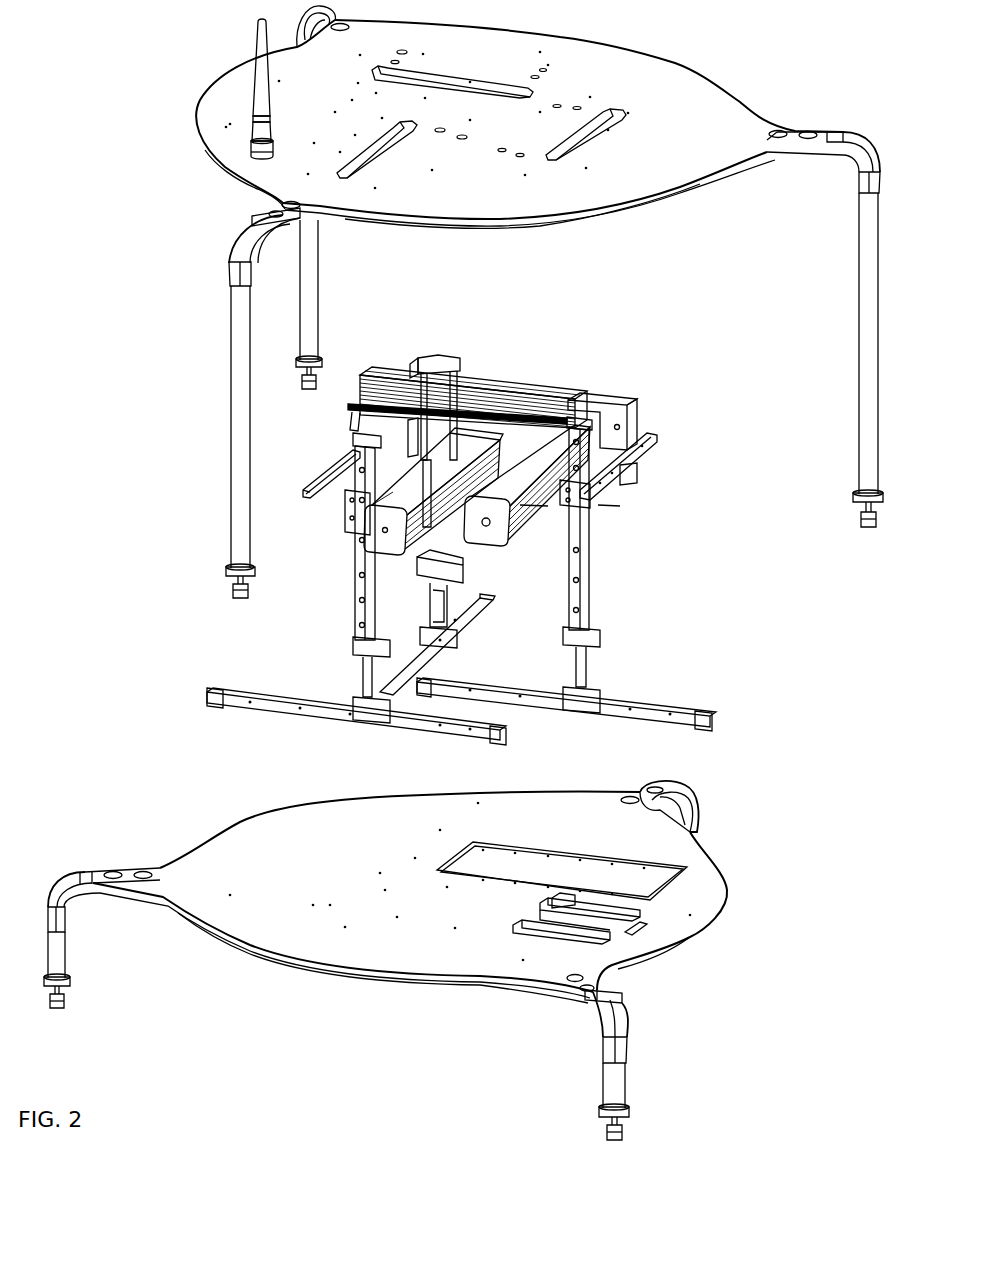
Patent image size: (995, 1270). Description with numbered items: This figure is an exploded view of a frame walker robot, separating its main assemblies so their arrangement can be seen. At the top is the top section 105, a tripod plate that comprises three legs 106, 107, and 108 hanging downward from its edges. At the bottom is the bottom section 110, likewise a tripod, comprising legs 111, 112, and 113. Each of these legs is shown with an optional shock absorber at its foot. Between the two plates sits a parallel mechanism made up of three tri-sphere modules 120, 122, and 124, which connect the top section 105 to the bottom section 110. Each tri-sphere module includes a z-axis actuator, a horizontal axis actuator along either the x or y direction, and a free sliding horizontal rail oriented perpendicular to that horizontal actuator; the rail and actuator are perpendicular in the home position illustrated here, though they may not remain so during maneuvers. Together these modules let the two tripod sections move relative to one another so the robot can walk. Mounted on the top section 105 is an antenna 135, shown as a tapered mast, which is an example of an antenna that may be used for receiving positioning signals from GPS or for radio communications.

The top section 105 is at (508, 63).
The leg 106 is at (852, 345).
The leg 107 is at (220, 408).
The leg 108 is at (320, 270).
The bottom section 110 is at (328, 863).
The leg 111 is at (75, 957).
The leg 112 is at (595, 1092).
The leg 113 is at (706, 810).
The tri-sphere module 120 is at (352, 598).
The tri-sphere module 122 is at (506, 383).
The tri-sphere module 124 is at (597, 573).
The antenna 135 is at (247, 45).